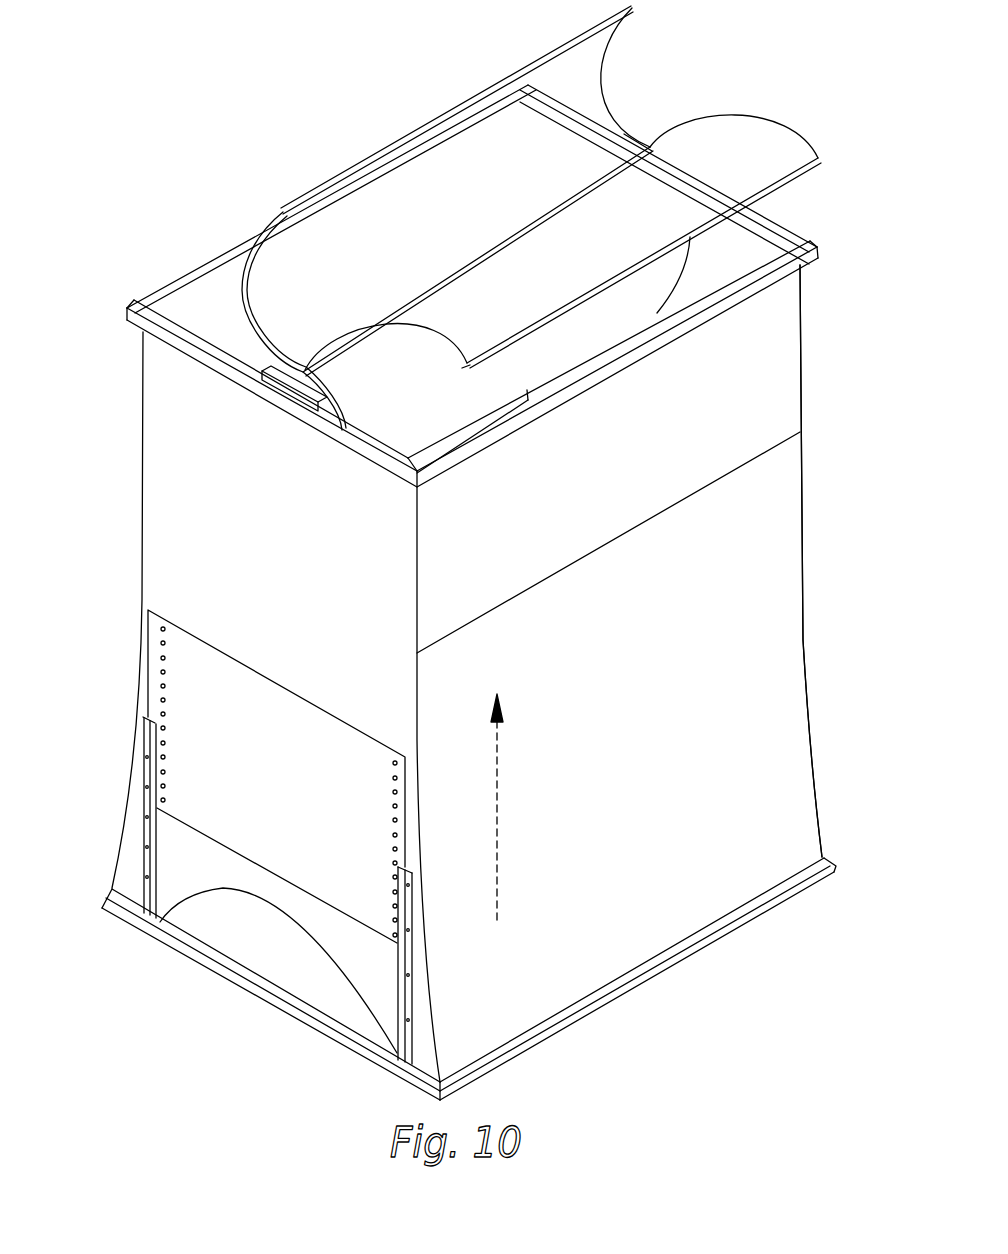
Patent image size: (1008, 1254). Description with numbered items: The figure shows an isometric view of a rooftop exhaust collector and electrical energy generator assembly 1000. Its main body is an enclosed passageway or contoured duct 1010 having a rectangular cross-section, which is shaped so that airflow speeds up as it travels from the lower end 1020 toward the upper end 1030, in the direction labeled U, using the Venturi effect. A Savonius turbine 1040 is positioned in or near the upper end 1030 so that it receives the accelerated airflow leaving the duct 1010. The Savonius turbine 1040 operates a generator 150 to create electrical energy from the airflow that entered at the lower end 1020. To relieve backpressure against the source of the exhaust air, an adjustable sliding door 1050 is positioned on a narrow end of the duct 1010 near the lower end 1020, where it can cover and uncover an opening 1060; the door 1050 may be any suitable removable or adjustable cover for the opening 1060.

The rooftop exhaust collector and electrical energy generator assembly 1000 is at (116, 459).
The contoured duct 1010 is at (793, 709).
The lower end 1020 is at (684, 983).
The upper end 1030 is at (735, 263).
The Savonius turbine 1040 is at (532, 247).
The adjustable sliding door 1050 is at (190, 712).
The opening 1060 is at (275, 972).
The generator 150 is at (270, 372).